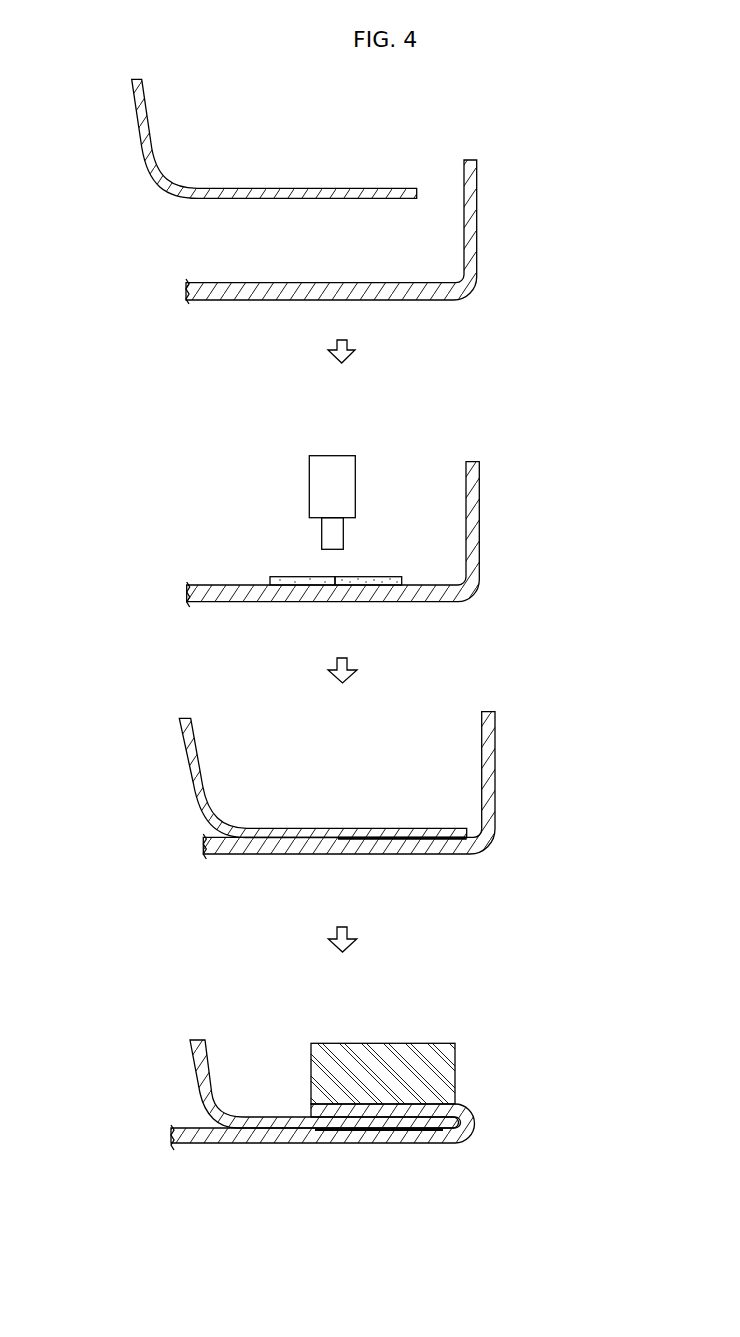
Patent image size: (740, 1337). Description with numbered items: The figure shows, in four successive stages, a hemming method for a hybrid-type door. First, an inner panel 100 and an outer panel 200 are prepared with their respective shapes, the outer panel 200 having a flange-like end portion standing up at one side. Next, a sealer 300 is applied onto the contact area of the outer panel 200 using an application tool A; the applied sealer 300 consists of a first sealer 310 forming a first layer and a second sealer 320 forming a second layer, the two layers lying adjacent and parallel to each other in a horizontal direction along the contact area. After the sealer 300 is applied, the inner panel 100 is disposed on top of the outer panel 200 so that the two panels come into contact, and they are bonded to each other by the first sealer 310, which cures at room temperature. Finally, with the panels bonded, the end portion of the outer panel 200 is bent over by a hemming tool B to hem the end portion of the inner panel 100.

The inner panel 100 is at (220, 188).
The outer panel 200 is at (255, 300).
The sealer 300 is at (400, 850).
The first sealer 310 is at (282, 577).
The second sealer 320 is at (392, 577).
The application tool A is at (332, 456).
The hemming tool B is at (423, 1043).